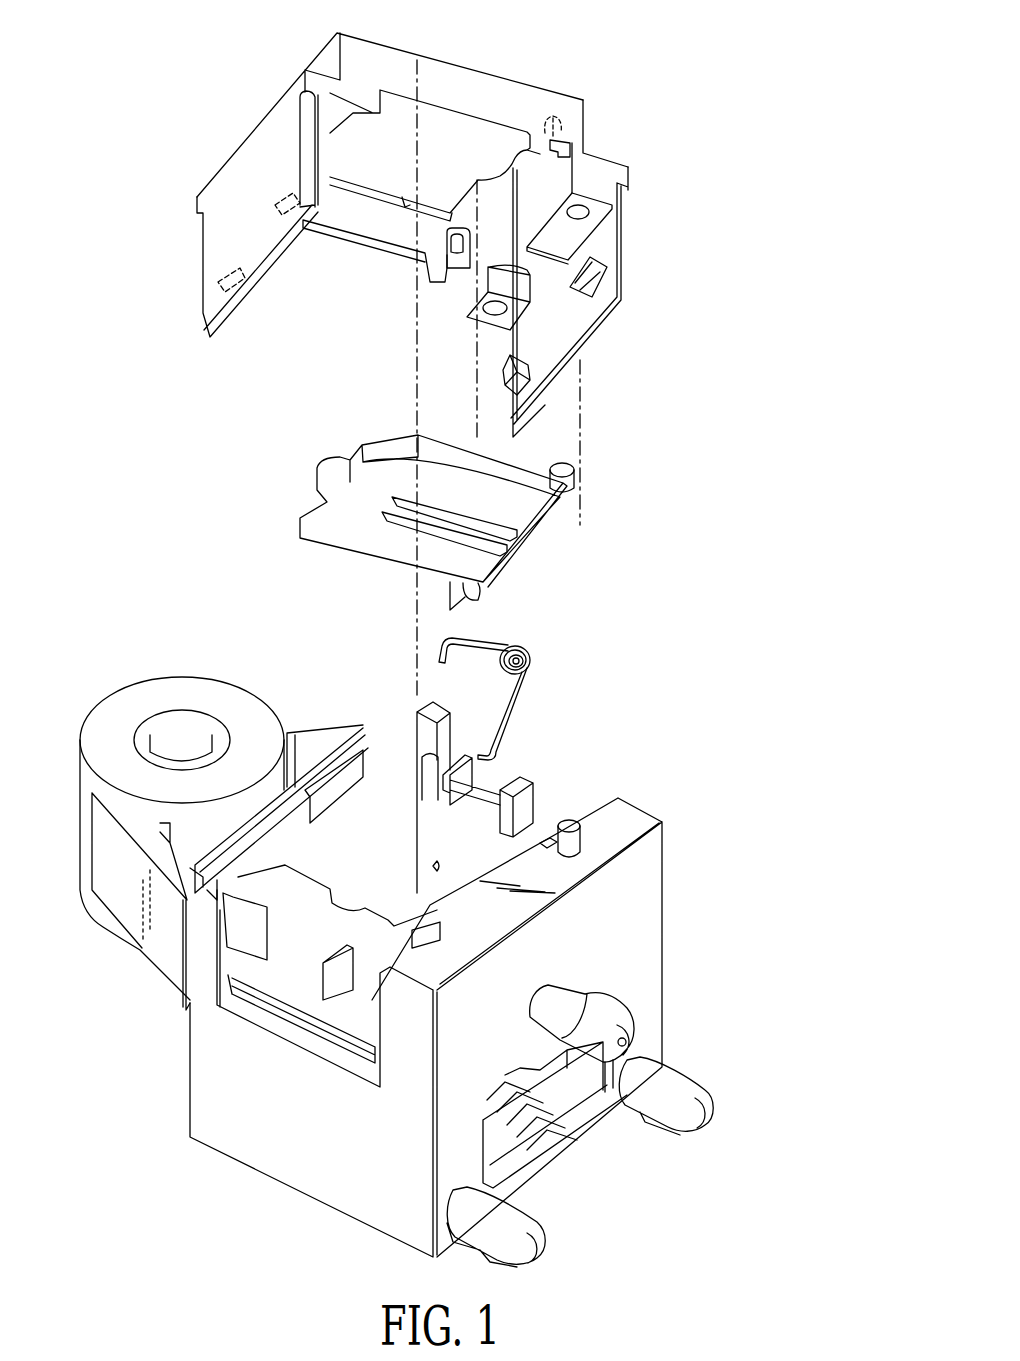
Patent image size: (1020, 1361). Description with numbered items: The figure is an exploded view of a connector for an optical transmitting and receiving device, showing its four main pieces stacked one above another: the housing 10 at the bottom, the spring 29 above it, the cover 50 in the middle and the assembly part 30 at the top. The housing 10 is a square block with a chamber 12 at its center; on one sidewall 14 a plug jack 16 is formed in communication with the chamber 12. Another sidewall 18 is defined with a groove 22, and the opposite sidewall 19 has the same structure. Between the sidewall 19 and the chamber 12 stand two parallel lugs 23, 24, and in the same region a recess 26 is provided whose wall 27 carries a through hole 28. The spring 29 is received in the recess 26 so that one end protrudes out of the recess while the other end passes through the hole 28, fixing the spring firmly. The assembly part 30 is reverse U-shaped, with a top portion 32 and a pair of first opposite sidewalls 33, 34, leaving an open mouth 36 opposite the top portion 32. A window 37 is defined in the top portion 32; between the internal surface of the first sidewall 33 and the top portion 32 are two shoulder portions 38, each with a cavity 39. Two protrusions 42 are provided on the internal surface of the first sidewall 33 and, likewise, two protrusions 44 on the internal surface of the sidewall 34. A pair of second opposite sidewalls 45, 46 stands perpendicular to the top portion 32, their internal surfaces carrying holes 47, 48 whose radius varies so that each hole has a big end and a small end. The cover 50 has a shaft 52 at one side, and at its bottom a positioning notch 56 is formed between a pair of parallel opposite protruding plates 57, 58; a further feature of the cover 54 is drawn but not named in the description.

The housing 10 is at (645, 898).
The chamber 12 is at (430, 897).
The sidewall 14 is at (497, 1060).
The plug jack 16 is at (567, 1103).
The sidewall 18 is at (323, 1180).
The sidewall 19 is at (545, 800).
The groove 22 is at (303, 1017).
The lug 23 is at (430, 753).
The lug 24 is at (573, 830).
The recess 26 is at (493, 790).
The wall 27 is at (362, 723).
The through hole 28 is at (433, 866).
The spring 29 is at (527, 643).
The assembly part 30 is at (258, 70).
The top portion 32 is at (462, 63).
The first sidewall 33 is at (625, 262).
The first sidewall 34 is at (250, 167).
The open mouth 36 is at (318, 353).
The window 37 is at (412, 120).
The shoulder portion 38 is at (597, 208).
The cavity 39 is at (587, 207).
The protrusion 42 is at (587, 290).
The protrusion 44 is at (210, 283).
The second sidewall 45 is at (345, 223).
The second sidewall 46 is at (518, 100).
The hole 47 is at (447, 253).
The hole 48 is at (563, 110).
The cover 50 is at (317, 507).
The shaft 52 is at (577, 477).
The slider side edge 54 is at (527, 523).
The positioning notch 56 is at (387, 503).
The protruding plate 57 is at (417, 527).
The protruding plate 58 is at (425, 545).